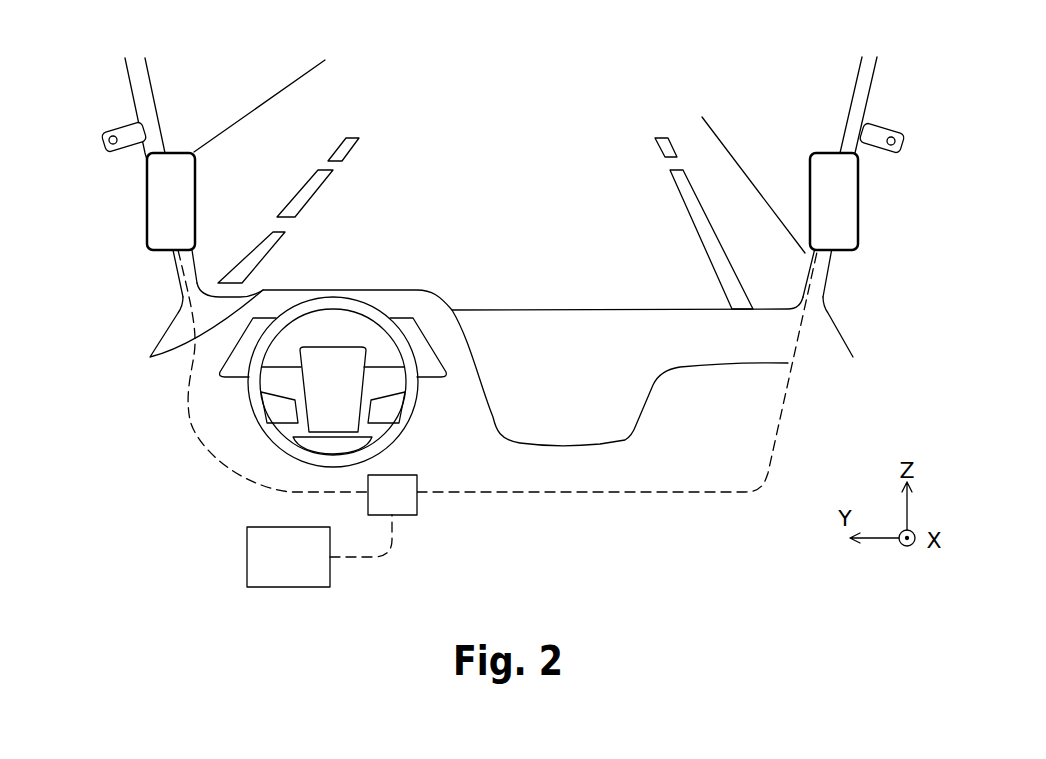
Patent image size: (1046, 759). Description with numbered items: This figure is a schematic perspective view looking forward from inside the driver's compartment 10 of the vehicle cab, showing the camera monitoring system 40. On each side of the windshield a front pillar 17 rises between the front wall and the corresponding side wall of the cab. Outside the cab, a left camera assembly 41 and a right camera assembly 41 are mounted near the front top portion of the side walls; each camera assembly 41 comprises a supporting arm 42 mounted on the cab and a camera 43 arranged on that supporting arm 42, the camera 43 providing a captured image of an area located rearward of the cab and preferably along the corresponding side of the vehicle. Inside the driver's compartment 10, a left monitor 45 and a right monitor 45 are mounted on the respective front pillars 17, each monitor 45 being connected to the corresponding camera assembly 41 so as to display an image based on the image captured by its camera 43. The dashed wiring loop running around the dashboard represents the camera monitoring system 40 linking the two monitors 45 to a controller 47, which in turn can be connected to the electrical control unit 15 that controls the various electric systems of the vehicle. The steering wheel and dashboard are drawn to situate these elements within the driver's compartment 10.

The driver's compartment 10 is at (770, 525).
The electrical control unit 15 is at (302, 570).
The front pillar 17 is at (145, 100).
The camera monitoring system 40 is at (200, 484).
The camera assembly 41 is at (503, 118).
The supporting arm 42 is at (130, 133).
The camera 43 is at (105, 144).
The monitor 45 is at (197, 213).
The controller 47 is at (405, 507).